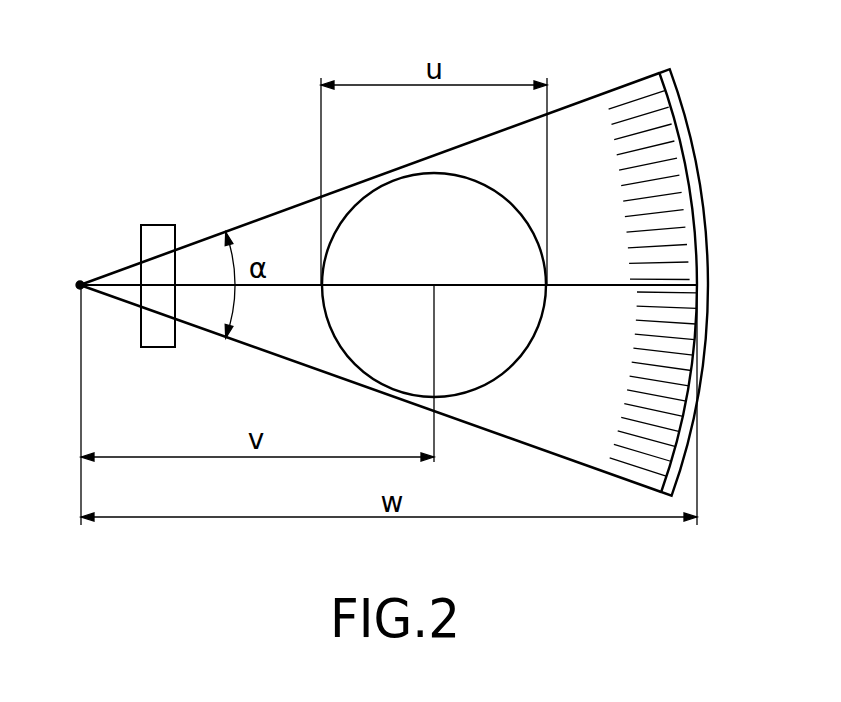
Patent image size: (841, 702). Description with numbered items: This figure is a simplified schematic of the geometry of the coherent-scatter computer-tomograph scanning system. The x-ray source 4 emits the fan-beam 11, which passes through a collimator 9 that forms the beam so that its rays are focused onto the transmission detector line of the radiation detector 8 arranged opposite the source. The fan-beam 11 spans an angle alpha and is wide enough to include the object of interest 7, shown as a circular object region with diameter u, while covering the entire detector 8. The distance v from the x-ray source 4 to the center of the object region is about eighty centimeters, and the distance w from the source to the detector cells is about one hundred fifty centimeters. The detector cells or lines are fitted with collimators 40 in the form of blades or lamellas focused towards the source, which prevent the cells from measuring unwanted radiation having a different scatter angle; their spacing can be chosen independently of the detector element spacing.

The x-ray source 4 is at (76, 284).
The collimator 9 is at (159, 225).
The fan-beam 11 is at (589, 99).
The object of interest 7 is at (527, 350).
The radiation detector 8 is at (707, 345).
The collimators 40 is at (628, 460).